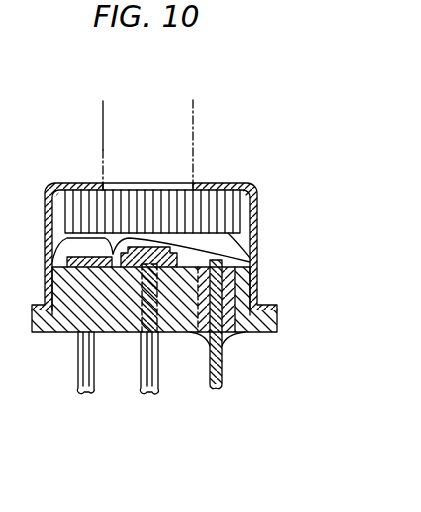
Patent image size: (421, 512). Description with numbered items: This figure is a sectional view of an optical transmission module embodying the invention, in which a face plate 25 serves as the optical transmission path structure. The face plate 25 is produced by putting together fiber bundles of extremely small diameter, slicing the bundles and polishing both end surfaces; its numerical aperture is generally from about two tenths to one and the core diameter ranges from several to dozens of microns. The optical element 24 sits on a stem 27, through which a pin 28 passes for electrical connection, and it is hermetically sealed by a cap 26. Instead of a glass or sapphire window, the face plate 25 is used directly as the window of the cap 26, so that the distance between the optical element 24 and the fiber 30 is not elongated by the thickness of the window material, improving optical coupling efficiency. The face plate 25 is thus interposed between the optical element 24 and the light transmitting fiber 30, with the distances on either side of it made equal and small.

The optical element 24 is at (237, 262).
The face plate 25 is at (136, 205).
The cap 26 is at (71, 184).
The stem 27 is at (50, 333).
The pin 28 is at (81, 366).
The fiber 30 is at (183, 124).